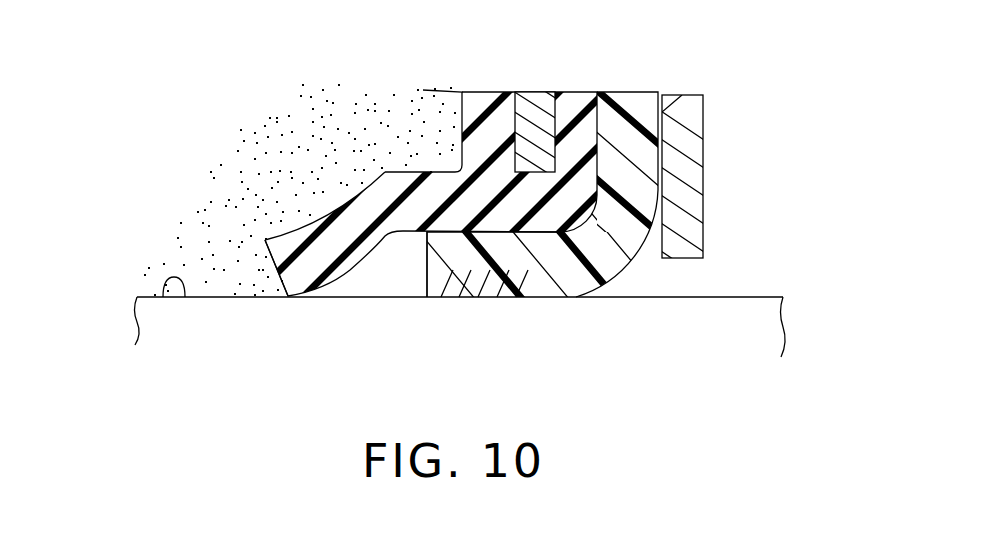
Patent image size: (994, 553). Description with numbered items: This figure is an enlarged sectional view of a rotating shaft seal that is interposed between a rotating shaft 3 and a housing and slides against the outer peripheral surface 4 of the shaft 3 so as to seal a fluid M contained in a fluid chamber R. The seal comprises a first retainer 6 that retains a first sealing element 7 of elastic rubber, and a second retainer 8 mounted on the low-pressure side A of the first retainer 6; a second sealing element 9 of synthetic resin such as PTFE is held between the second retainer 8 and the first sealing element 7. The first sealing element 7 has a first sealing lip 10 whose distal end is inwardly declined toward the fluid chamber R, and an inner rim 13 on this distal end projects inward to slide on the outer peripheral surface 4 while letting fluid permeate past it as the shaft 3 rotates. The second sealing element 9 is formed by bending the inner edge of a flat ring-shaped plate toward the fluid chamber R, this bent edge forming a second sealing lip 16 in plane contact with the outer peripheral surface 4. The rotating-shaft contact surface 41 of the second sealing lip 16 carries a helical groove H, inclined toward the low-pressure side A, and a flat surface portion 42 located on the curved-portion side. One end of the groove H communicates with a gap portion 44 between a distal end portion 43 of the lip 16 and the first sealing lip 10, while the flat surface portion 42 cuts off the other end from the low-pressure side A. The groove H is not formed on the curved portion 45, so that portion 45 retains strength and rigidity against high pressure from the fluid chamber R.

The rotating shaft 3 is at (744, 297).
The outer peripheral surface 4 is at (185, 297).
The first retainer 6 is at (535, 100).
The first sealing element 7 is at (461, 121).
The second retainer 8 is at (690, 108).
The second sealing element 9 is at (580, 100).
The first sealing lip 10 is at (341, 279).
The inner rim 13 is at (290, 293).
The second sealing lip 16 is at (537, 248).
The rotating-shaft contact surface 41 is at (425, 322).
The flat surface portion 42 is at (517, 307).
The distal end portion 43 is at (424, 268).
The gap portion 44 is at (370, 272).
The curved portion 45 is at (633, 246).
The fluid M is at (277, 163).
The fluid chamber R is at (313, 142).
The low-pressure side A is at (786, 153).
The helical groove H is at (446, 258).